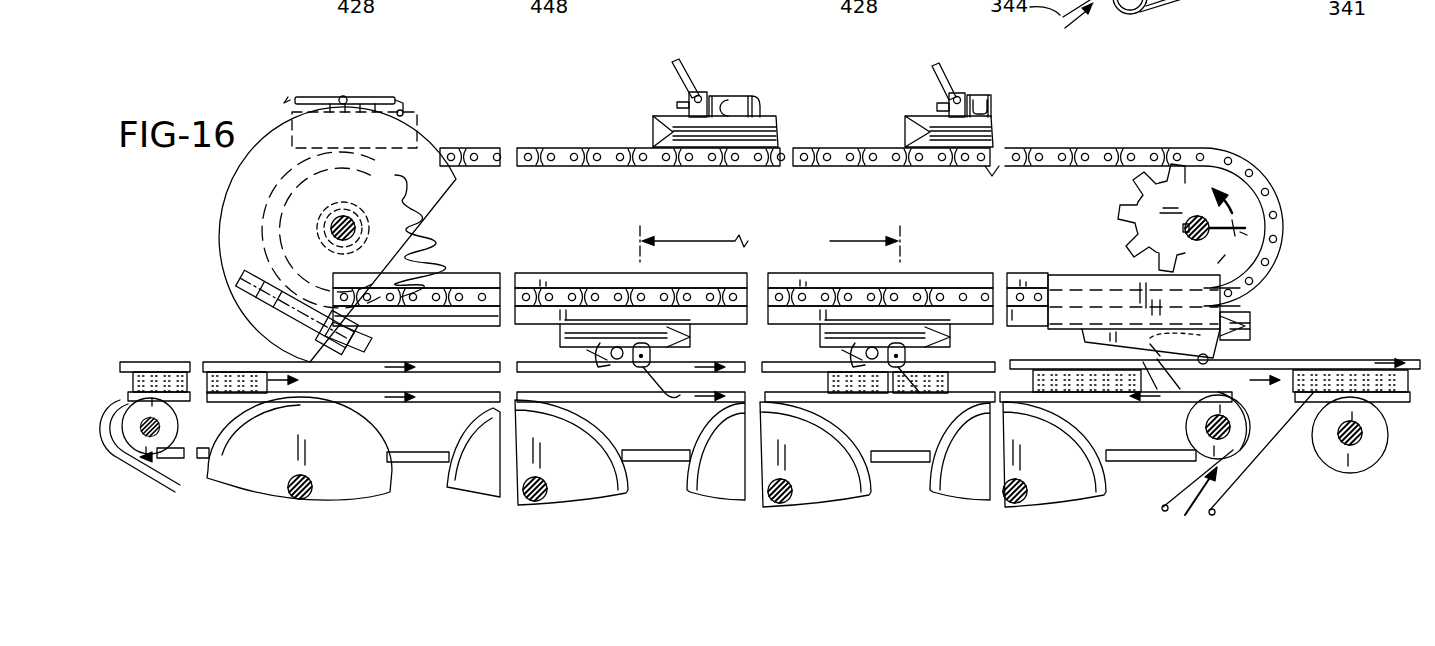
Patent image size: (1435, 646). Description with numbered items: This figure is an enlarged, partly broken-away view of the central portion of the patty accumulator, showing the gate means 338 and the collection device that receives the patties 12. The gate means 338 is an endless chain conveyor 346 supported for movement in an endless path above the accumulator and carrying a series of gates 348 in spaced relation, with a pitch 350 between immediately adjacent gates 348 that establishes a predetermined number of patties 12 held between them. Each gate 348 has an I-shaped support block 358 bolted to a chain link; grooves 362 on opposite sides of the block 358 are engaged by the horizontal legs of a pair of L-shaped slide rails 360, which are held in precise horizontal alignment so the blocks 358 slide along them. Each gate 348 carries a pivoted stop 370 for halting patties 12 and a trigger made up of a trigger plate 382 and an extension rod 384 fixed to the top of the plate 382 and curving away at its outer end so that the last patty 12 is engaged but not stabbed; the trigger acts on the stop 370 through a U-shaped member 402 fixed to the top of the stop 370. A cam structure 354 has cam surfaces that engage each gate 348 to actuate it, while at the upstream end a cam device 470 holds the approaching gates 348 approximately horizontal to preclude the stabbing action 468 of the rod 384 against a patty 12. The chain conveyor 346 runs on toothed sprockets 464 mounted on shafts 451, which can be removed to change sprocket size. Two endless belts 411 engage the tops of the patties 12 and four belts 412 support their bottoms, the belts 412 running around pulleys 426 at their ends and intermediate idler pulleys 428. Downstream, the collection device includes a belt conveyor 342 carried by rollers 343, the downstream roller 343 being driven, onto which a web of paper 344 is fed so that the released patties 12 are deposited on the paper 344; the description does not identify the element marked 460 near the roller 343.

The patties 12 is at (172, 376).
The gate means 338 is at (566, 112).
The belt conveyor 342 is at (1268, 463).
The rollers 343 is at (1378, 452).
The web of paper 344 is at (1210, 512).
The endless chain conveyor 346 is at (995, 166).
The gates 348 is at (395, 102).
The pitch 350 is at (830, 241).
The cam structure 354 is at (1160, 329).
The support block 358 is at (652, 122).
The L-shaped slide rails 360 is at (515, 276).
The grooves 362 is at (900, 132).
The stop 370 is at (737, 95).
The trigger plate 382 is at (704, 80).
The extension rod 384 is at (688, 68).
The U-shaped member 402 is at (993, 108).
The endless belts 411 is at (478, 372).
The belts 412 is at (450, 402).
The pulleys 426 is at (151, 408).
The intermediate idler pulleys 428 is at (460, 485).
The shaft 451 is at (1198, 216).
The roller shaft 460 is at (1360, 440).
The toothed sprockets 464 is at (410, 258).
The stabbing action 468 is at (345, 364).
The cam device 470 is at (233, 199).